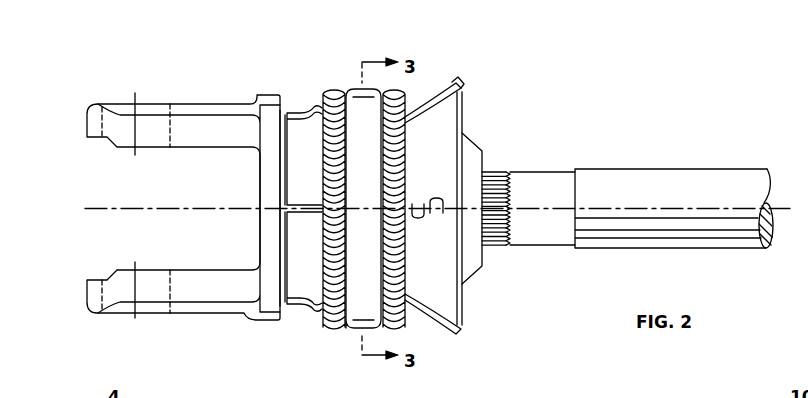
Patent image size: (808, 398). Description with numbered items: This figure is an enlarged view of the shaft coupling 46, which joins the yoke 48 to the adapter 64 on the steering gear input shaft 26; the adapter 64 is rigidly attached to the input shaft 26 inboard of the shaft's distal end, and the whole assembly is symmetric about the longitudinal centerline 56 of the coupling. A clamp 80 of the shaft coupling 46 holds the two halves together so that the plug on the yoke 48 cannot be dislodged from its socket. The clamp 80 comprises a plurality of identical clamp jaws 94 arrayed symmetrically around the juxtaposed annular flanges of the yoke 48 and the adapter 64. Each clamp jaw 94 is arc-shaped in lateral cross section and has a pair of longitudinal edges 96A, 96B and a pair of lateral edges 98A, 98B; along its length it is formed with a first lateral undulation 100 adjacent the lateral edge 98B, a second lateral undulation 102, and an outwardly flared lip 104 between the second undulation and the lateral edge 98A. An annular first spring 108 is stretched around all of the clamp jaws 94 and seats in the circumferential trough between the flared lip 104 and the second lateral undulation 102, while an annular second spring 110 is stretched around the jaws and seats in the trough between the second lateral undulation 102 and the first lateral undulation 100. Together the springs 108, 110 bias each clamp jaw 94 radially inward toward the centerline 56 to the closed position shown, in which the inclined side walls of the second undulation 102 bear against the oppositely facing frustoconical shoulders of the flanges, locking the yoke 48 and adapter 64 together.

The steering gear input shaft 26 is at (661, 165).
The shaft coupling 46 is at (470, 74).
The yoke 48 is at (180, 98).
The longitudinal centerline 56 is at (157, 212).
The adapter 64 is at (492, 190).
The clamp 80 is at (344, 78).
The clamp jaw 94 is at (470, 122).
The longitudinal edge 96A is at (424, 206).
The longitudinal edge 96B is at (432, 216).
The lateral edge 98A is at (462, 165).
The lateral edge 98B is at (280, 168).
The first lateral undulation 100 is at (310, 288).
The second lateral undulation 102 is at (360, 293).
The outwardly flared lip 104 is at (450, 110).
The annular first spring 108 is at (410, 285).
The annular second spring 110 is at (326, 96).